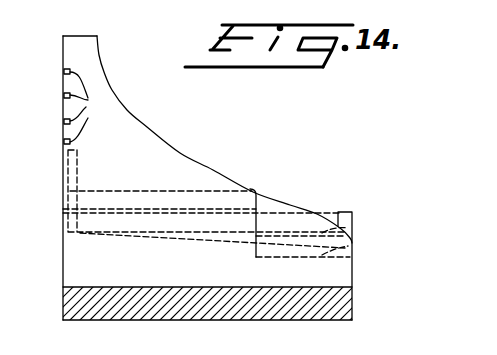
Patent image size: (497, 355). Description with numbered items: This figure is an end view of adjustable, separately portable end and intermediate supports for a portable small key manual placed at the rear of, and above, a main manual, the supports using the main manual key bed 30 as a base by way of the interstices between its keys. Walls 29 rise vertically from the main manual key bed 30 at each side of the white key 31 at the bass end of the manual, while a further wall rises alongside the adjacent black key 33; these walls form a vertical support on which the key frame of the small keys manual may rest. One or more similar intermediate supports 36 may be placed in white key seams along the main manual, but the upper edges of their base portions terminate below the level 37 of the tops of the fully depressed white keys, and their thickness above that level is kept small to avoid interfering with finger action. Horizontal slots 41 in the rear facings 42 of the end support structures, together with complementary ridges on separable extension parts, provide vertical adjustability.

The wall 29 is at (147, 127).
The main manual key bed 30 is at (193, 287).
The white key 31 is at (338, 212).
The black key 33 is at (185, 209).
The intermediate support 36 is at (80, 162).
The level of the tops of the fully depressed white keys 37 is at (199, 232).
The horizontal slots 41 is at (86, 106).
The rear facings 42 is at (63, 52).